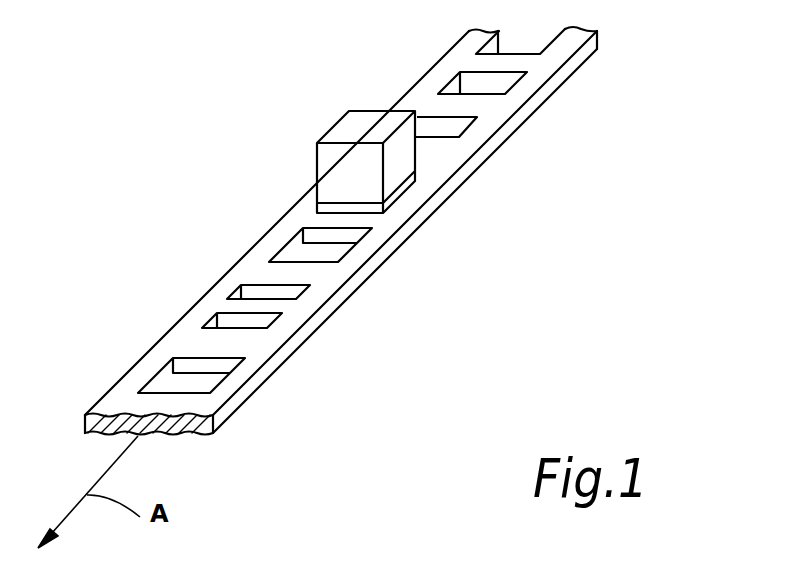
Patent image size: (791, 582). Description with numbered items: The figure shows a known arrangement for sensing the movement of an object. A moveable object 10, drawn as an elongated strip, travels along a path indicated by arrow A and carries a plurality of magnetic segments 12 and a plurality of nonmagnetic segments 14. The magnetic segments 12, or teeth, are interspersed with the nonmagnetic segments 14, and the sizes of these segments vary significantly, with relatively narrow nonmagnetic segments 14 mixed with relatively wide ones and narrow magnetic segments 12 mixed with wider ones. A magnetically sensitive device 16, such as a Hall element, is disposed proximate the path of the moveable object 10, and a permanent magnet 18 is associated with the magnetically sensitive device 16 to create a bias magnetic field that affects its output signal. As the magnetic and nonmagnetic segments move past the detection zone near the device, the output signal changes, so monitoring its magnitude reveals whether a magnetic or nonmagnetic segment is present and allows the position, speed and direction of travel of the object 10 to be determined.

The moveable object 10 is at (230, 407).
The magnetic segments 12 is at (520, 62).
The nonmagnetic segments 14 is at (320, 250).
The magnetically sensitive device 16 is at (403, 192).
The permanent magnet 18 is at (405, 150).